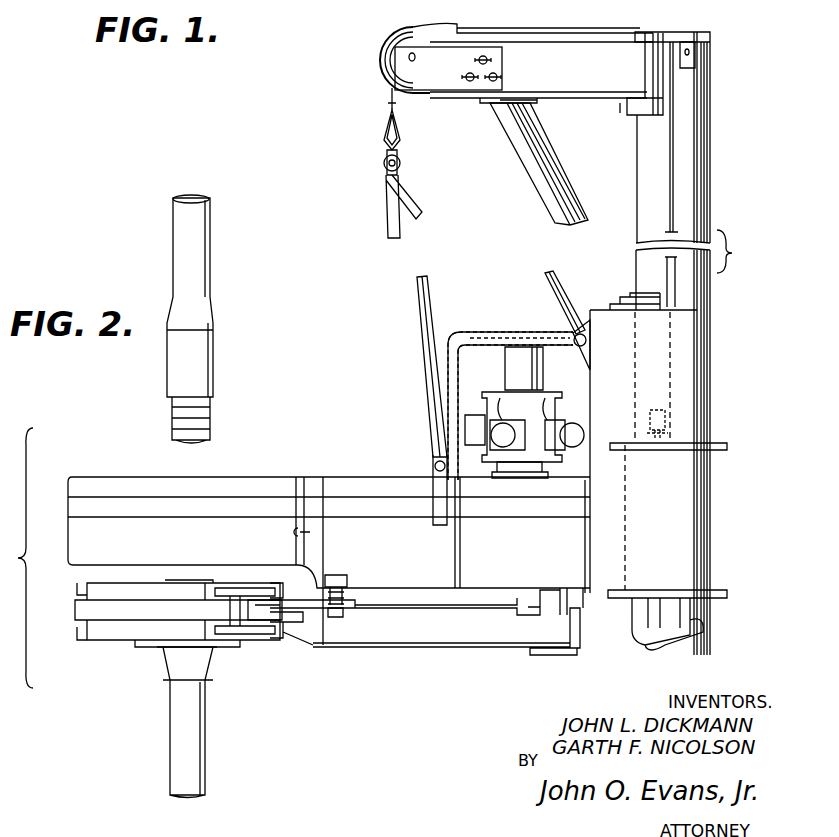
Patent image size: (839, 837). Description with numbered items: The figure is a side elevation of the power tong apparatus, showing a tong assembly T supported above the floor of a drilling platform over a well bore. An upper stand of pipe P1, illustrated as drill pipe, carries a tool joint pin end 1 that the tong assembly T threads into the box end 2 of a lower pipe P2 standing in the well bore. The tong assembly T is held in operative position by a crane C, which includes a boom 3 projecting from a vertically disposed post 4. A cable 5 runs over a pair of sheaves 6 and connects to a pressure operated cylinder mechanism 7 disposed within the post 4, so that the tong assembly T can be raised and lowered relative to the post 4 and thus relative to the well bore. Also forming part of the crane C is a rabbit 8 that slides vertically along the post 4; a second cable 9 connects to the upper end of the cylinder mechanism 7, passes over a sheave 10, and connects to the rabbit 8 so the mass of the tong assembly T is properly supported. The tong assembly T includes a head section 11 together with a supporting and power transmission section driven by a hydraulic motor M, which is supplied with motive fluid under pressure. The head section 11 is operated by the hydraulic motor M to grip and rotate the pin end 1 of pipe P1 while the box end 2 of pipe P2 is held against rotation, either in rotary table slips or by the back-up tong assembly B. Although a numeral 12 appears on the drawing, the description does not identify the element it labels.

The tool joint pin end 1 is at (213, 362).
The box end 2 is at (167, 643).
The boom 3 is at (558, 90).
The post 4 is at (710, 127).
The cable 5 is at (540, 36).
The sheaves 6 is at (383, 57).
The pressure operated cylinder mechanism 7 is at (638, 654).
The rabbit 8 is at (725, 509).
The second cable 9 is at (675, 182).
The sheave 10 is at (680, 53).
The head section 11 is at (96, 475).
The frame 12 is at (576, 588).
The back-up tong assembly B is at (102, 651).
The crane C is at (619, 114).
The hydraulic motor M is at (492, 392).
The tong assembly T is at (378, 480).
The upper stand of pipe P1 is at (210, 238).
The pipe P2 is at (205, 725).